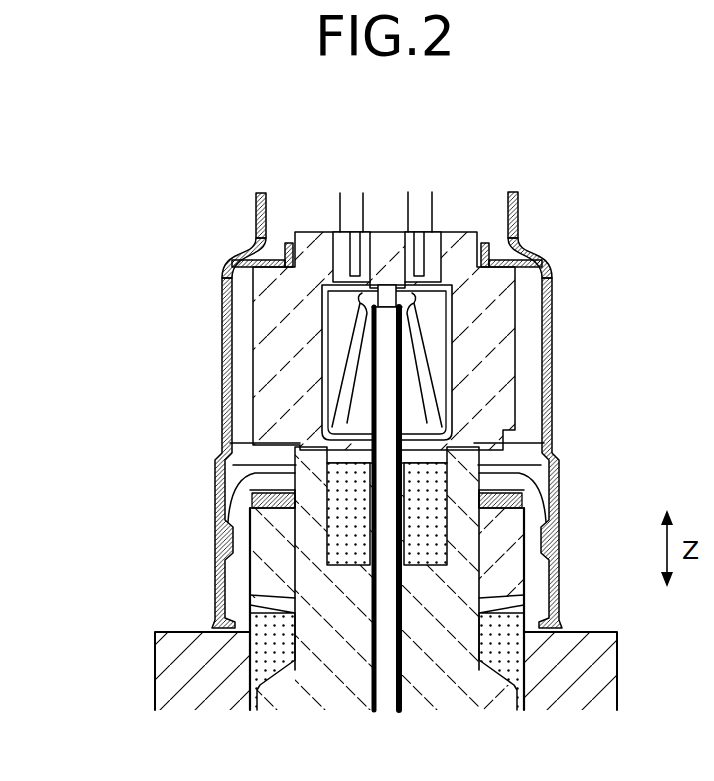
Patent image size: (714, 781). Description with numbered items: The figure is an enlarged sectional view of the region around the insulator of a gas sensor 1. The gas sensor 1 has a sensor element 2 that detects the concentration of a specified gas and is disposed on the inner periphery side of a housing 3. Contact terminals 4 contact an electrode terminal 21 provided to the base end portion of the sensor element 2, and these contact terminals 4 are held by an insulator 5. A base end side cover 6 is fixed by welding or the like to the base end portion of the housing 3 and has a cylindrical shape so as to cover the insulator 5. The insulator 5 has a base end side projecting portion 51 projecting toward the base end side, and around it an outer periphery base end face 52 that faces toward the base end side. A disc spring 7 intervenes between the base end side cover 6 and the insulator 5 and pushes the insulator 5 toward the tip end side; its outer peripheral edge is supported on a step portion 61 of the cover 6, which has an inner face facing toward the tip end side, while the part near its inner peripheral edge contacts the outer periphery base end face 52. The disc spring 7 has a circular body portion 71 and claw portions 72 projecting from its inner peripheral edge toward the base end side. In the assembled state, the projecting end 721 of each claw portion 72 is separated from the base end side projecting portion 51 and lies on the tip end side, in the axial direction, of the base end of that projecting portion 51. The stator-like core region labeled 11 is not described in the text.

The gas sensor 1 is at (75, 658).
The sensor element 2 is at (388, 668).
The housing 3 is at (587, 682).
The contact terminal 4 is at (347, 404).
The insulator 5 is at (473, 401).
The base end side cover 6 is at (547, 440).
The disc spring 7 is at (222, 284).
The stator core 11 is at (353, 669).
The electrode terminal 21 is at (365, 318).
The base end side projecting portion 51 is at (312, 240).
The outer periphery base end face 52 is at (288, 246).
The step portion 61 is at (250, 243).
The circular body portion 71 is at (532, 238).
The claw portion 72 is at (513, 199).
The projecting end 721 is at (484, 242).